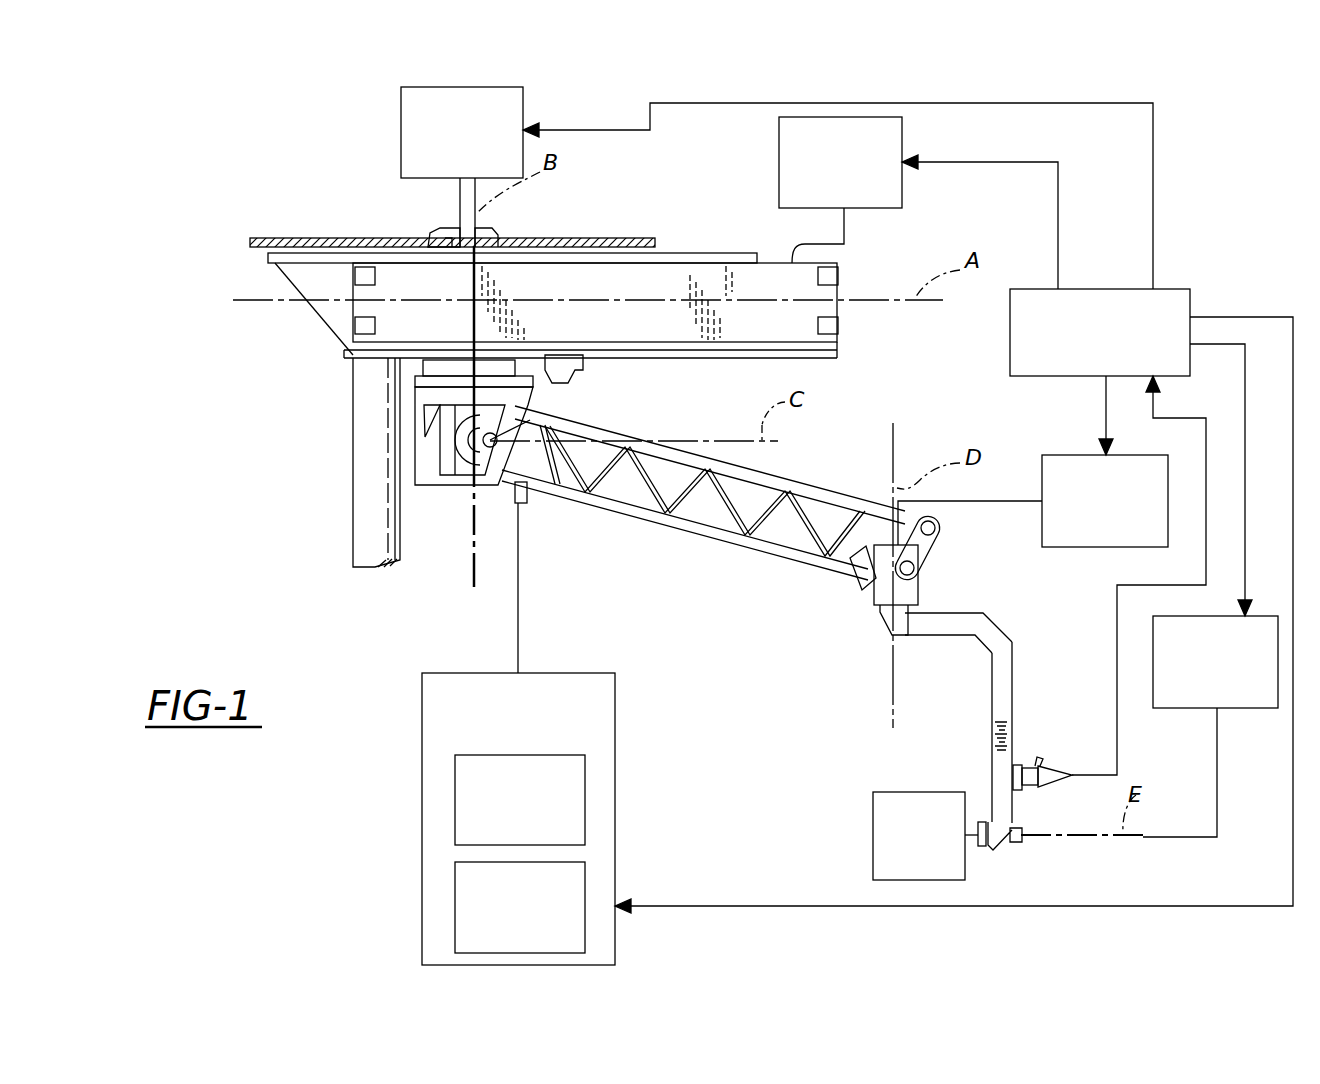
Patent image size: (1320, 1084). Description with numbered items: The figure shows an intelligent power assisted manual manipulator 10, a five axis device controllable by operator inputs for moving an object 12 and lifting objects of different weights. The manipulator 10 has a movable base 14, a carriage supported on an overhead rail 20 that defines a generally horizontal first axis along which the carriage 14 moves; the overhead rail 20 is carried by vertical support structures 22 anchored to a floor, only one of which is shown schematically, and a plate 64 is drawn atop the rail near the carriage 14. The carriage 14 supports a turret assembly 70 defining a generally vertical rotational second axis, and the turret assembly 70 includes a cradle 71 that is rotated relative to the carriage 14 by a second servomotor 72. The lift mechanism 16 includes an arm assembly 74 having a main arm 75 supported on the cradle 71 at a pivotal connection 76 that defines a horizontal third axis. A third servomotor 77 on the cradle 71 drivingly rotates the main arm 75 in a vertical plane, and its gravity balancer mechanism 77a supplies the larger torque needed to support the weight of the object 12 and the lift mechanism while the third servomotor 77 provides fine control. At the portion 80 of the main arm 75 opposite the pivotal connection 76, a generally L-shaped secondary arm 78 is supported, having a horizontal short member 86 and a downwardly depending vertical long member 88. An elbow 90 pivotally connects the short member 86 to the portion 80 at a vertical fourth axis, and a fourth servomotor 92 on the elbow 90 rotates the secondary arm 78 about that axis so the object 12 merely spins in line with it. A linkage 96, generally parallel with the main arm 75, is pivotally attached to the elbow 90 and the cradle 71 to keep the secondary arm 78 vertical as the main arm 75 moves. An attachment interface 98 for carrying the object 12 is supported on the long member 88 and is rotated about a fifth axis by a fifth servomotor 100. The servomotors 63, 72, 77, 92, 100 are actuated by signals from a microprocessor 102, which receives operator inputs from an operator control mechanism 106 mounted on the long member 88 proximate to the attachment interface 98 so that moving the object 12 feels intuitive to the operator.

The intelligent power assisted manual manipulator 10 is at (317, 403).
The object 12 is at (903, 792).
The movable base 14 is at (500, 232).
The lift mechanism 16 is at (697, 555).
The overhead rail 20 is at (805, 244).
The vertical support structures 22 is at (357, 497).
The servomotor 63 is at (779, 178).
The plate 64 is at (646, 238).
The turret assembly 70 is at (540, 386).
The cradle 71 is at (433, 485).
The second servomotor 72 is at (401, 127).
The arm assembly 74 is at (830, 575).
The main arm 75 is at (627, 516).
The pivotal connection 76 is at (497, 439).
The third servomotor 77 is at (585, 780).
The gravity balancer mechanism 77a is at (585, 885).
The secondary arm 78 is at (1006, 628).
The portion of the main arm 80 is at (918, 568).
The short member 86 is at (961, 623).
The long member 88 is at (1003, 695).
The elbow 90 is at (932, 540).
The fourth servomotor 92 is at (1055, 455).
The linkage 96 is at (843, 503).
The attachment interface 98 is at (985, 846).
The fifth servomotor 100 is at (1258, 708).
The microprocessor 102 is at (1180, 289).
The operator control mechanism 106 is at (1052, 770).